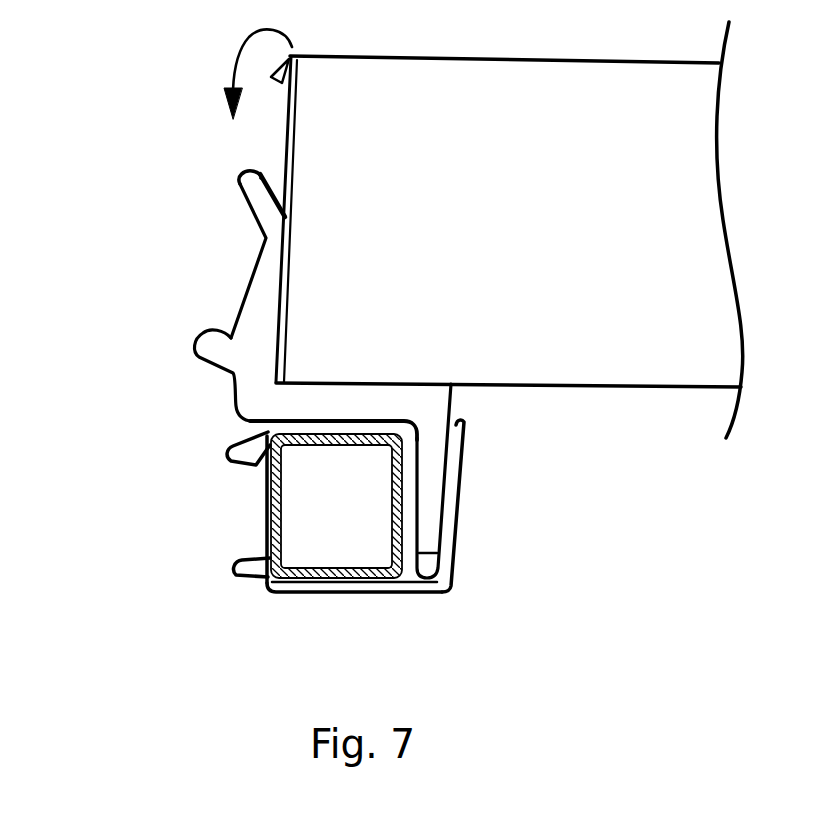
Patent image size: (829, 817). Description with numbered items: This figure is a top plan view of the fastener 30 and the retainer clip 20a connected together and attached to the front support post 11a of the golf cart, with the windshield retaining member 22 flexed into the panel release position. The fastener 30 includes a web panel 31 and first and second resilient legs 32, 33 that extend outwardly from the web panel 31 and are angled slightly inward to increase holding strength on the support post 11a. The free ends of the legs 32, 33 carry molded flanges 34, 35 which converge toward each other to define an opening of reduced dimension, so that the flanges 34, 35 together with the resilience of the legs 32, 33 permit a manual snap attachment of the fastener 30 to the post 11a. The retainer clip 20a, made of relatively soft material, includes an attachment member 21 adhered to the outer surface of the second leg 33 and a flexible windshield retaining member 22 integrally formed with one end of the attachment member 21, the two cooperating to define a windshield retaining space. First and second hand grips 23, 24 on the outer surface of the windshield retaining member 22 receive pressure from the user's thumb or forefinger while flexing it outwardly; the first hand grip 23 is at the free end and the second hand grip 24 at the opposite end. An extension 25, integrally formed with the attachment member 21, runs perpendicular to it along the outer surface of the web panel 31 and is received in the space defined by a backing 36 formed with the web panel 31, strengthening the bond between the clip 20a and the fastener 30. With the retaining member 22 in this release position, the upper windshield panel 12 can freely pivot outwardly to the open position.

The upper windshield panel 12 is at (496, 231).
The retainer clip 20a is at (141, 281).
The first hand grip 23 is at (247, 186).
The windshield retaining member 22 is at (266, 296).
The second hand grip 24 is at (203, 350).
The attachment member 21 is at (372, 410).
The extension 25 is at (428, 480).
The fastener 30 is at (476, 548).
The backing 36 is at (461, 504).
The first resilient leg 32 is at (352, 597).
The web panel 31 is at (410, 507).
The second resilient leg 33 is at (268, 424).
The molded flange 35 is at (229, 459).
The molded flange 34 is at (238, 575).
The front support post 11a is at (268, 507).